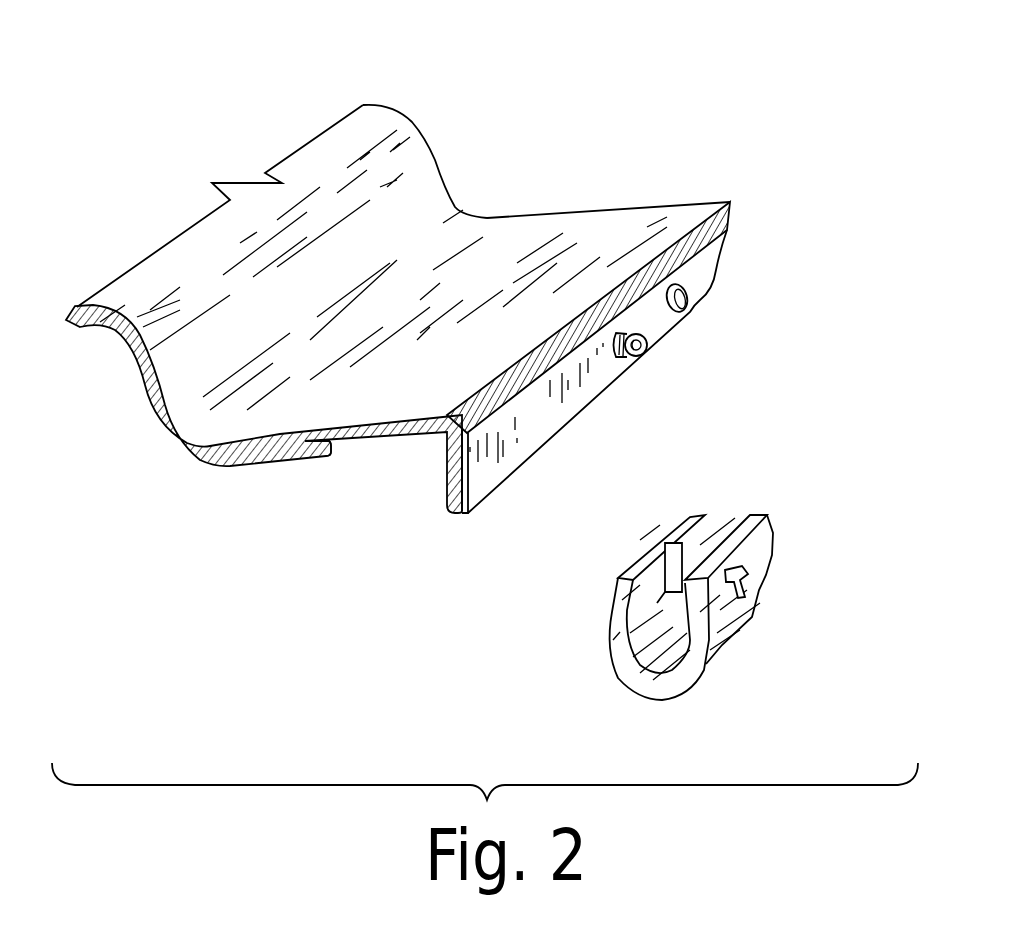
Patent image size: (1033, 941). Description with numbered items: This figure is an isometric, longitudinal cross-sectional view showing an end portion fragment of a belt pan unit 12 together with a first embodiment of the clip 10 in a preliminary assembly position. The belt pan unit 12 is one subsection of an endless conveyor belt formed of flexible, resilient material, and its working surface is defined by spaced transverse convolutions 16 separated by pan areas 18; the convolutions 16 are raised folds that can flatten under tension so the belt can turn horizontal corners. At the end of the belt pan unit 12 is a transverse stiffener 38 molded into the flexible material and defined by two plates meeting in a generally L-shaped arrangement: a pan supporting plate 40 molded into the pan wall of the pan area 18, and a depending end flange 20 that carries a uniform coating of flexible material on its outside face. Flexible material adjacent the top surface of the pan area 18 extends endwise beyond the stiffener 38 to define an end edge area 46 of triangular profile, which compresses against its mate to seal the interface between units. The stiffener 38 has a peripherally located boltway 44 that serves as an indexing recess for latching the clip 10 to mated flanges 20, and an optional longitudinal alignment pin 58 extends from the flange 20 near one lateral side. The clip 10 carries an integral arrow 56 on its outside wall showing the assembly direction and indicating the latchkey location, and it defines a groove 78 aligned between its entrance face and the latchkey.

The clip 10 is at (757, 630).
The belt pan unit 12 is at (268, 92).
The convolution 16 is at (430, 137).
The pan area 18 is at (520, 222).
The end flange 20 is at (447, 496).
The stiffener 38 is at (705, 280).
The pan supporting plate 40 is at (328, 447).
The peripherally located boltway 44 is at (668, 312).
The end edge area 46 is at (731, 204).
The arrow 56 is at (747, 578).
The alignment pin 58 is at (637, 345).
The groove 78 is at (665, 540).